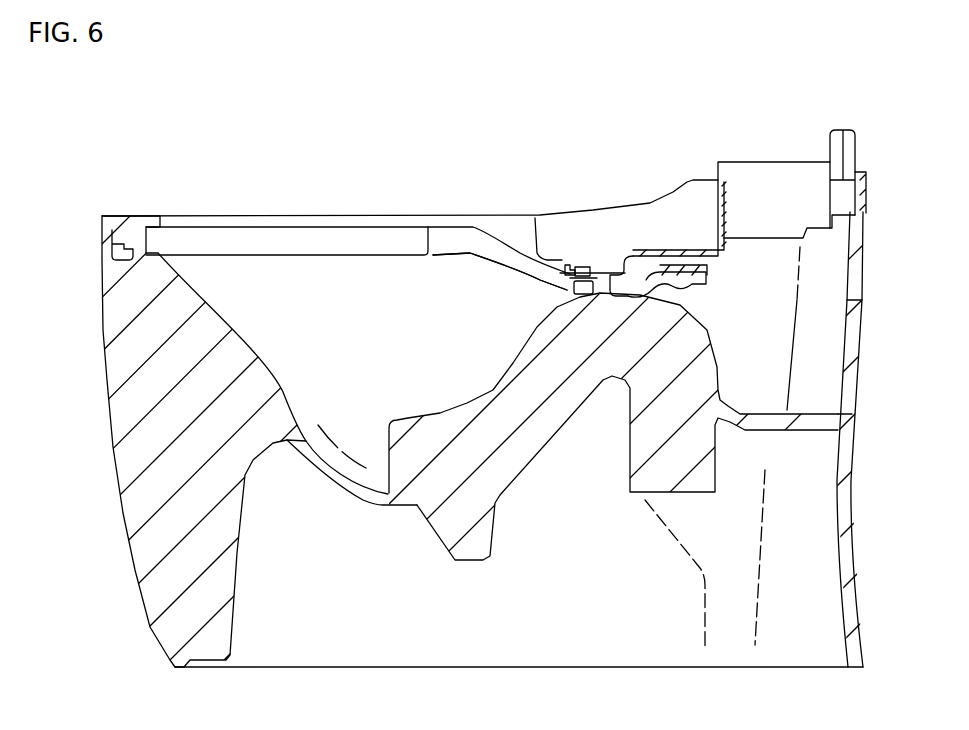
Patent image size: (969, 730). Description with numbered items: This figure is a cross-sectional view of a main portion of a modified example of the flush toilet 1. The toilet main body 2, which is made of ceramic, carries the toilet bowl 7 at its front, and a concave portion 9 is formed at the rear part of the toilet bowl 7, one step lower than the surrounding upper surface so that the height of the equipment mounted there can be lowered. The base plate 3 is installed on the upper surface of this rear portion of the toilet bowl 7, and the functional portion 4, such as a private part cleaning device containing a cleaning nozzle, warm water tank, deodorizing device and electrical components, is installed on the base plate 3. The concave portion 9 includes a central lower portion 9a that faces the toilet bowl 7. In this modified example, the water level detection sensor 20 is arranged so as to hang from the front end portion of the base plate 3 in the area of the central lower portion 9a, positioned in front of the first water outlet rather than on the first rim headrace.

The flush toilet 1 is at (272, 138).
The toilet main body 2 is at (142, 507).
The base plate 3 is at (611, 267).
The functional portion 4 is at (705, 178).
The toilet bowl 7 is at (368, 290).
The concave portion 9 is at (592, 217).
The central lower portion 9a is at (606, 294).
The water level detection sensor 20 is at (532, 276).